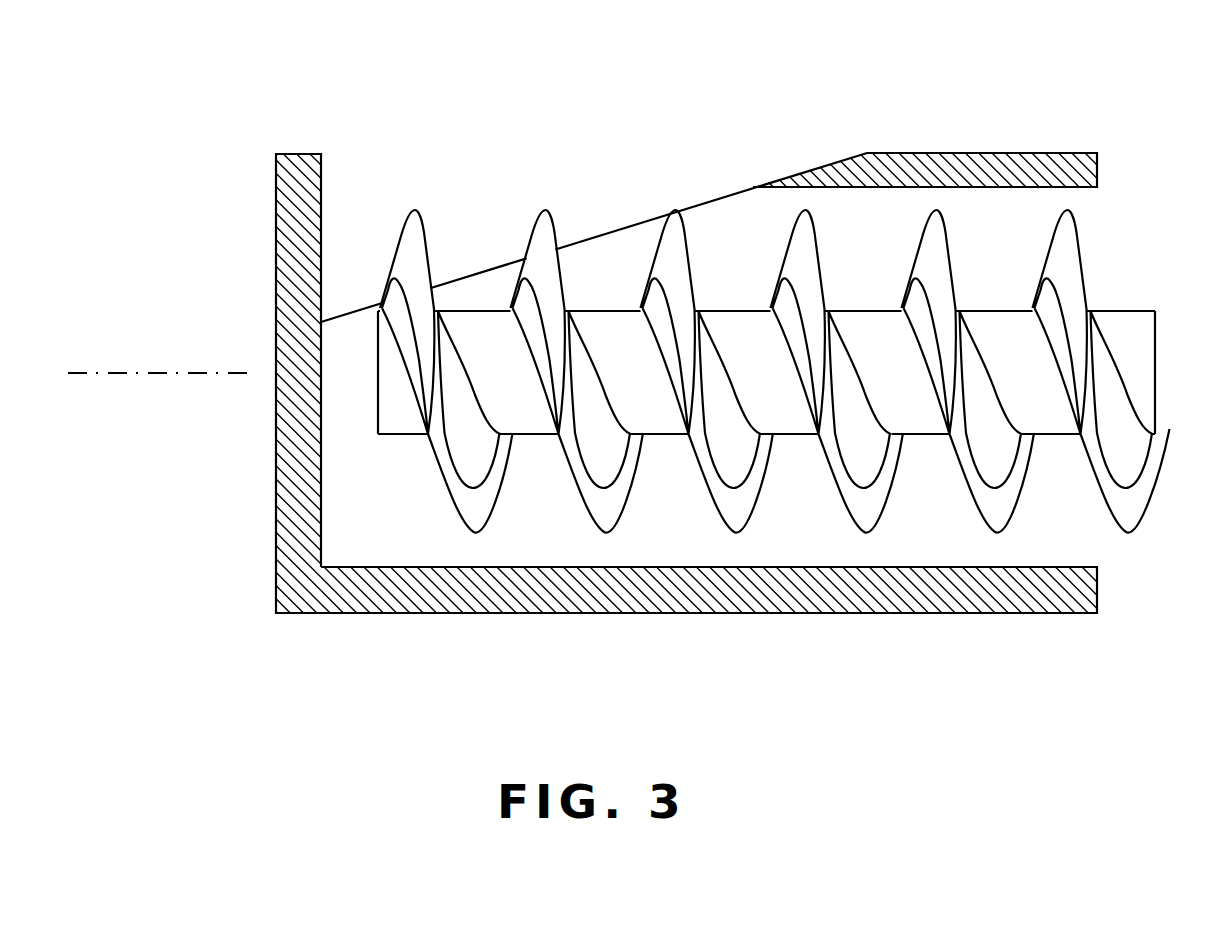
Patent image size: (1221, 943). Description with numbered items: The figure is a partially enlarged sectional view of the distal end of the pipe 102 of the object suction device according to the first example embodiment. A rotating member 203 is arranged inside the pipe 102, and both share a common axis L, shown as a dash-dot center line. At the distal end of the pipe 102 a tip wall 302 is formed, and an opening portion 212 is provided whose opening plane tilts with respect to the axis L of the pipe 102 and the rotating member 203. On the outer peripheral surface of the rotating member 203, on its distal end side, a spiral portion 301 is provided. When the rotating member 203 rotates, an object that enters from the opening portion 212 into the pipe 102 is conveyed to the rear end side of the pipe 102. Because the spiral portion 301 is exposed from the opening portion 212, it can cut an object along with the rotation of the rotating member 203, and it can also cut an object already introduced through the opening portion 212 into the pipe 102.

The pipe 102 is at (407, 597).
The rotating member 203 is at (932, 412).
The opening portion 212 is at (707, 200).
The spiral portion 301 is at (830, 476).
The tip wall 302 is at (296, 153).
The axis L is at (157, 374).